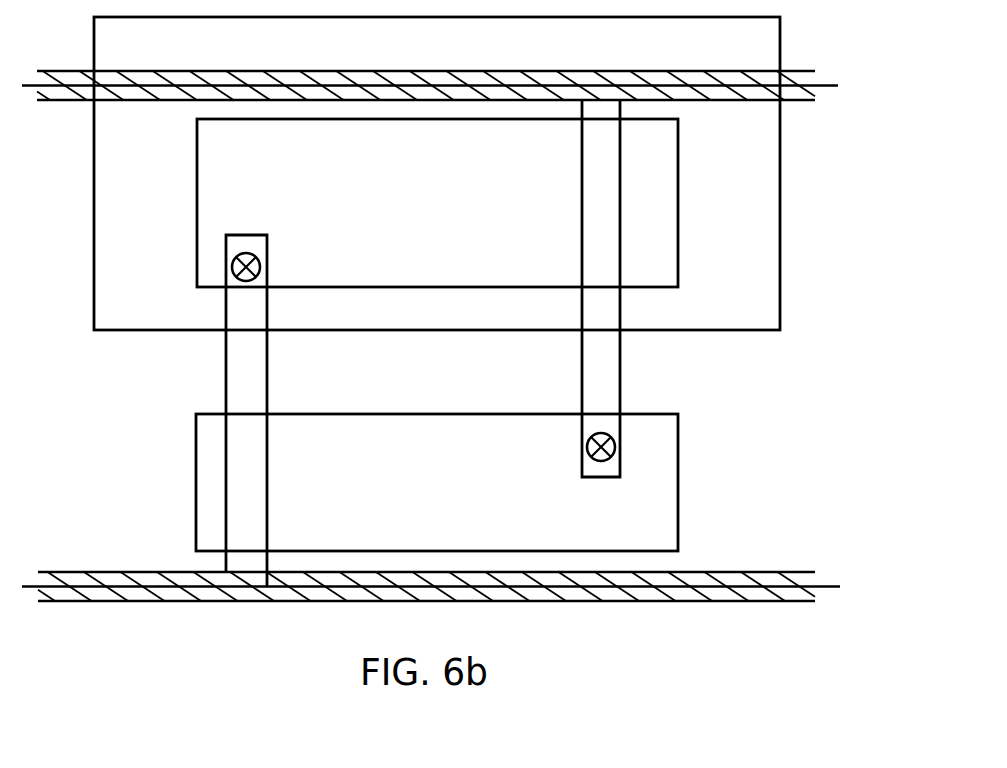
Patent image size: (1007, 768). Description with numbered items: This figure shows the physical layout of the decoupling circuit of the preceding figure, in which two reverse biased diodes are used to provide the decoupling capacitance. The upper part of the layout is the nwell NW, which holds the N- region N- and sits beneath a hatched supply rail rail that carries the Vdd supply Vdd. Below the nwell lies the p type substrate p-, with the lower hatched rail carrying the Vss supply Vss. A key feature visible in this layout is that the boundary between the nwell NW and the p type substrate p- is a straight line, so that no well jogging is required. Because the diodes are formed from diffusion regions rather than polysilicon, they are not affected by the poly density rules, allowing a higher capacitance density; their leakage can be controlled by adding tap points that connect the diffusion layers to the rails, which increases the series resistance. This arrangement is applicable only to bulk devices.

The nwell NW is at (437, 173).
The power rail (Vdd) rail is at (836, 76).
The N- region N- is at (401, 202).
The Vdd contact strip Vdd is at (672, 288).
The p type substrate p- is at (104, 484).
The Vss rail Vss is at (100, 572).